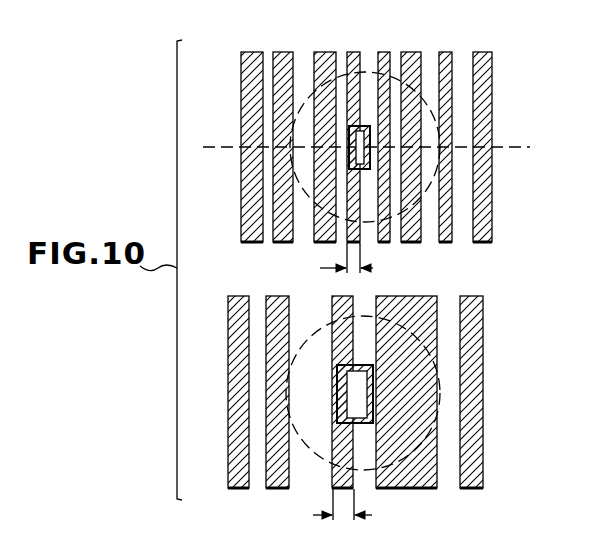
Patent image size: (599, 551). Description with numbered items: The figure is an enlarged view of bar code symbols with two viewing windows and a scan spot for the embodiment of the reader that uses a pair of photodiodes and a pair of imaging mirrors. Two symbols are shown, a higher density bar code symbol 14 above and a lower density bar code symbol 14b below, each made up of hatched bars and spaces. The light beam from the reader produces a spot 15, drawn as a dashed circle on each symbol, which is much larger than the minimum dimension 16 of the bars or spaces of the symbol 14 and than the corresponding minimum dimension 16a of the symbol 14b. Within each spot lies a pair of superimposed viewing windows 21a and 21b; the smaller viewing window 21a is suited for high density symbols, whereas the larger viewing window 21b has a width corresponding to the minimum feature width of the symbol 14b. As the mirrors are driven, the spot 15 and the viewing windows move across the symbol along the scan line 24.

The bar code symbol 14 is at (237, 87).
The bar code symbol 14b is at (225, 327).
The spot 15 is at (372, 70).
The minimum dimension 16 is at (342, 270).
The minimum dimension 16a is at (345, 517).
The viewing window 21a is at (360, 126).
The viewing window 21b is at (337, 364).
The scan line 24 is at (519, 148).